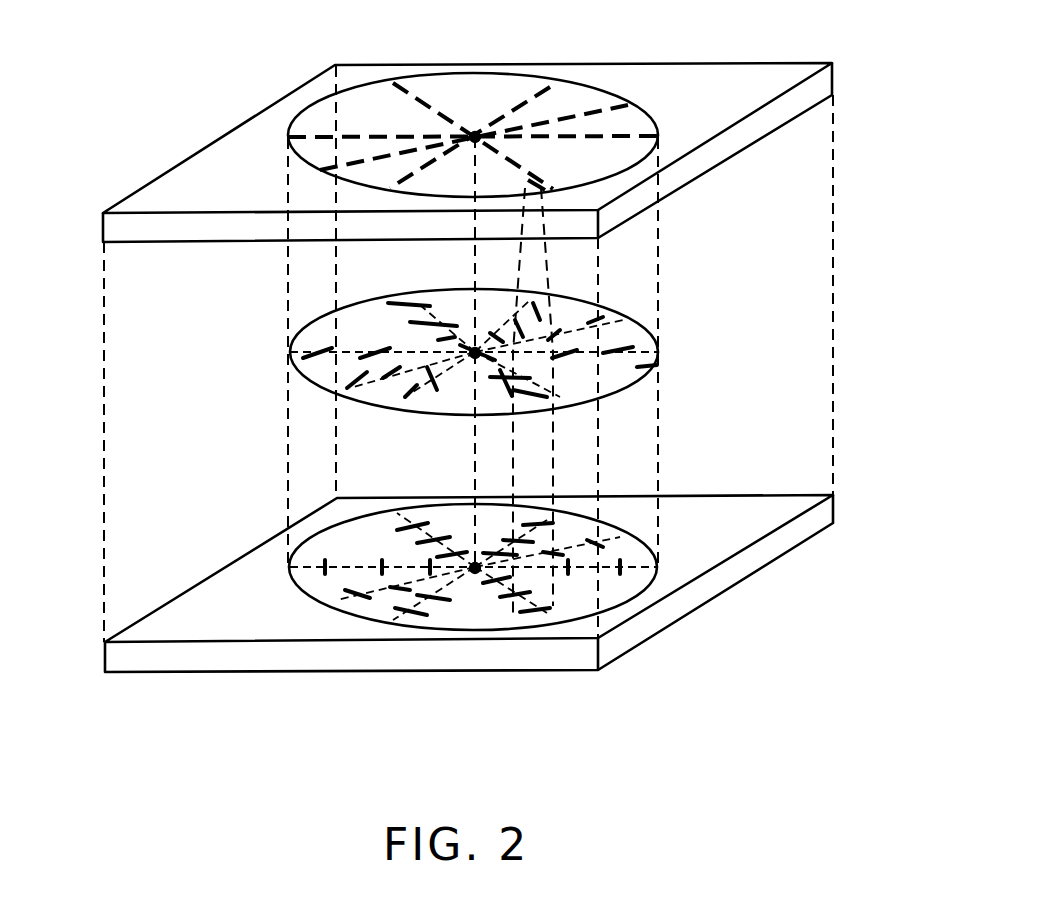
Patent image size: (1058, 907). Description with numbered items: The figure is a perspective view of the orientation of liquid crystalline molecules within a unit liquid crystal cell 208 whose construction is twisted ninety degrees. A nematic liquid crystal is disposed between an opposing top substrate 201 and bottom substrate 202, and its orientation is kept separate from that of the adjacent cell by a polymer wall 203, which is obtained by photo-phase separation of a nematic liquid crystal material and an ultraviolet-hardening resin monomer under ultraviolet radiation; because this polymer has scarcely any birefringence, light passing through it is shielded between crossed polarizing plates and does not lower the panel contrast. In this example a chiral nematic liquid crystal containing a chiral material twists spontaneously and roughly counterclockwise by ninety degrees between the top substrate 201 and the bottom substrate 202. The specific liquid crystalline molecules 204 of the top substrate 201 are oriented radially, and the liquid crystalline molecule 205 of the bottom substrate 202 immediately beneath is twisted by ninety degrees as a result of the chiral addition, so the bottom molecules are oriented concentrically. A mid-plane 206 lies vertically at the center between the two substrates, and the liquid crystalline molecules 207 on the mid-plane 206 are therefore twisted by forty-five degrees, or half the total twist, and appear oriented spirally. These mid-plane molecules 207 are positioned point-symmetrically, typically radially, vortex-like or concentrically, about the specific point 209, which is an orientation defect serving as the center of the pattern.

The top substrate 201 is at (707, 155).
The bottom substrate 202 is at (713, 583).
The polymer wall 203 is at (318, 104).
The liquid crystalline molecules of the top substrate 204 is at (533, 184).
The liquid crystalline molecule of the bottom substrate 205 is at (530, 613).
The mid-plane 206 is at (660, 362).
The liquid crystalline molecules on the mid-plane 207 is at (580, 404).
The unit liquid crystal cell 208 is at (648, 463).
The specific point 209 is at (475, 353).